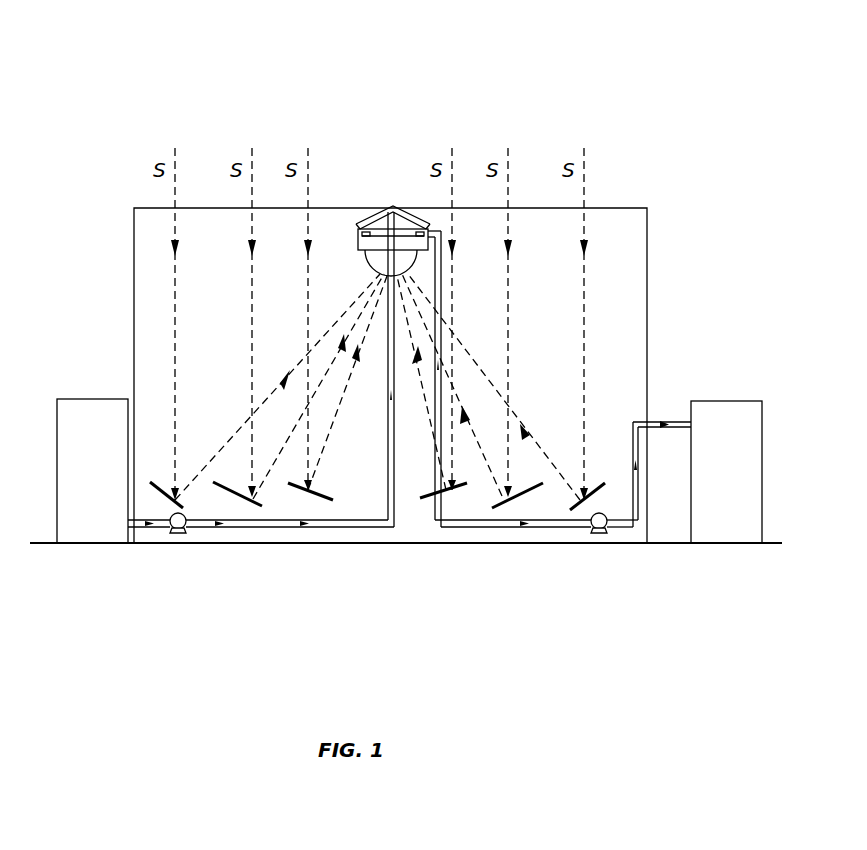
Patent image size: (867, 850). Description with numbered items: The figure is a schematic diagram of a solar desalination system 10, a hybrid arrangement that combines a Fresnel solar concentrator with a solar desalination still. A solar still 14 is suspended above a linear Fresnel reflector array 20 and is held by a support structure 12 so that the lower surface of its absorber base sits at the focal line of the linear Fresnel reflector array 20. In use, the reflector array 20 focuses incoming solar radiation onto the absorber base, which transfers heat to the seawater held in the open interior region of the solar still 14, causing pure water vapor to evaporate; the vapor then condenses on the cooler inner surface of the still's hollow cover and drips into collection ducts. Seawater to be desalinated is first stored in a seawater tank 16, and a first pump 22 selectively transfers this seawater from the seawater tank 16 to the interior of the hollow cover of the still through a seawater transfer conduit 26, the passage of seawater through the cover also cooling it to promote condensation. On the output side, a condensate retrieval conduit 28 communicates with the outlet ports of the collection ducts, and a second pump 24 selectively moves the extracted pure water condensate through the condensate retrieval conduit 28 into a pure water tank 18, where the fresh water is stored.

The solar desalination system 10 is at (690, 70).
The support structure 12 is at (647, 208).
The solar still 14 is at (391, 190).
The seawater tank 16 is at (77, 399).
The pure water tank 18 is at (745, 401).
The linear Fresnel reflector array 20 is at (287, 500).
The first pump 22 is at (178, 533).
The second pump 24 is at (600, 533).
The seawater transfer conduit 26 is at (337, 528).
The condensate retrieval conduit 28 is at (454, 528).